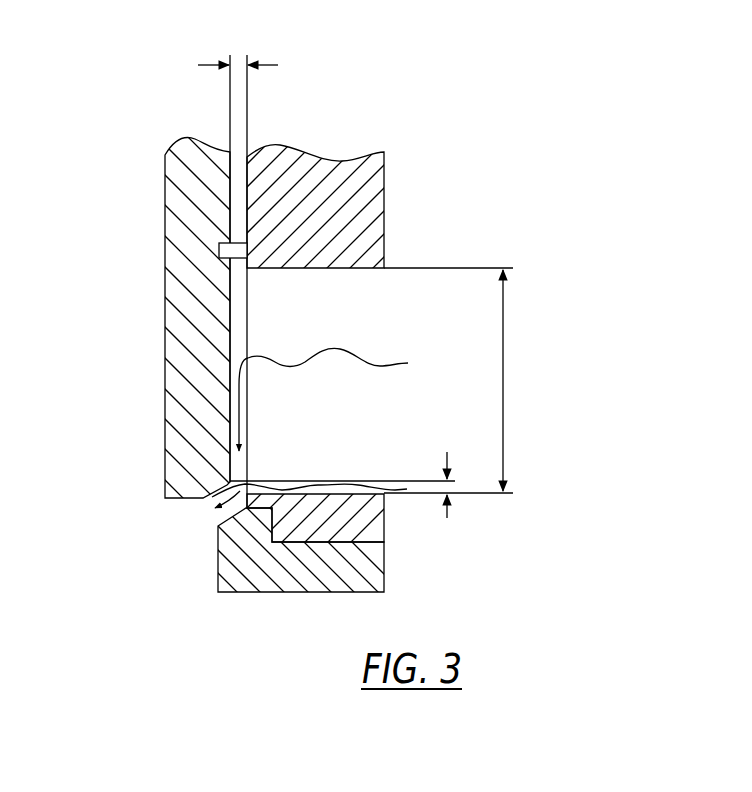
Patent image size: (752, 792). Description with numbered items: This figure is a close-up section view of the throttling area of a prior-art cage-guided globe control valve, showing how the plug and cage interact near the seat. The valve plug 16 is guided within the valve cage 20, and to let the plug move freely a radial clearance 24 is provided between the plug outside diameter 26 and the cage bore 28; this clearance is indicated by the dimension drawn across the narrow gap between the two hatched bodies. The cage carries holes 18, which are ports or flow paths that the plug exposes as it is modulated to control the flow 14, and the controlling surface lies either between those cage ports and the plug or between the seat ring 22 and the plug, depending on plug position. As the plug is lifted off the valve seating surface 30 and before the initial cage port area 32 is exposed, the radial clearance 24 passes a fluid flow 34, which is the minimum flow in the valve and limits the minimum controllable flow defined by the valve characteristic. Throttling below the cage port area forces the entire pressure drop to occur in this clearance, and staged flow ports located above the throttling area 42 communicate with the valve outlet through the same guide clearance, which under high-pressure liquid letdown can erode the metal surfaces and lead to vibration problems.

The flow 14 is at (391, 366).
The valve plug 16 is at (165, 155).
The holes 18 is at (503, 338).
The valve cage 20 is at (385, 142).
The seat ring 22 is at (265, 604).
The radial clearance 24 is at (207, 63).
The plug outside diameter 26 is at (229, 149).
The cage bore 28 is at (247, 149).
The valve seating surface 30 is at (218, 526).
The initial cage port area 32 is at (447, 517).
The fluid flow 34 is at (238, 413).
The throttling area 42 is at (200, 511).